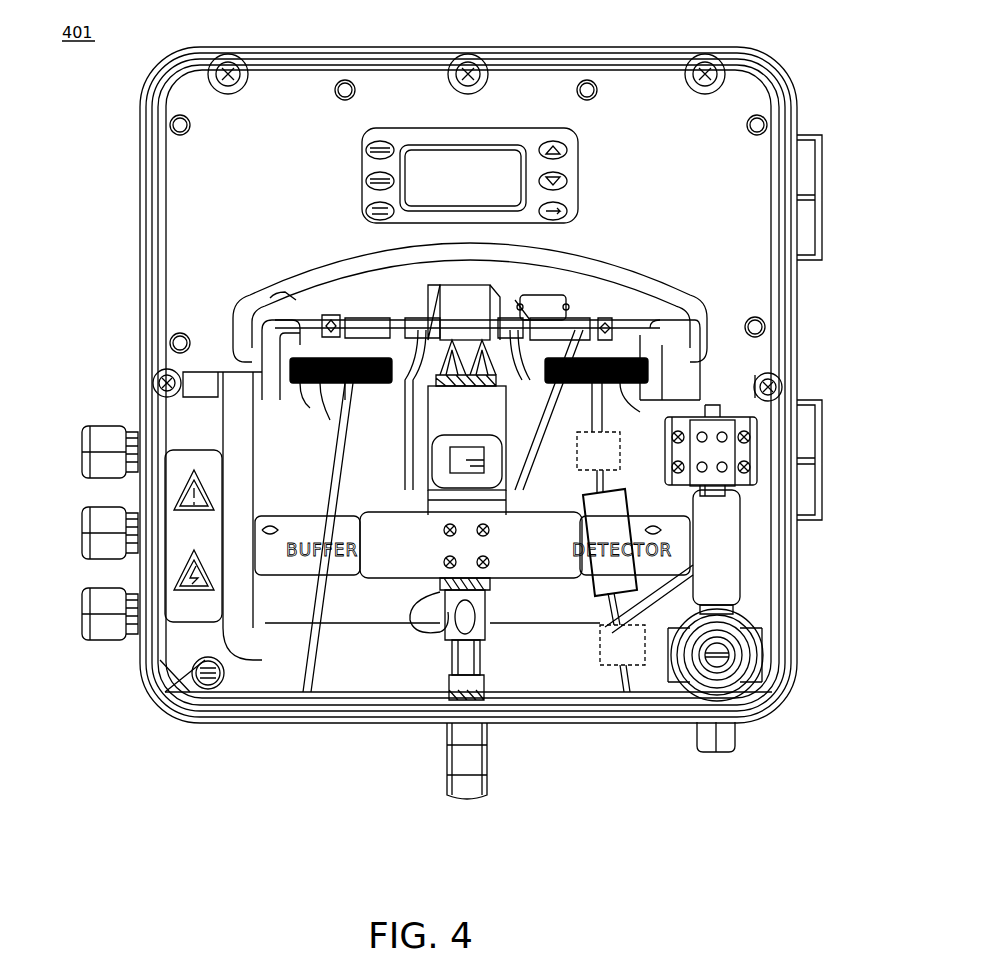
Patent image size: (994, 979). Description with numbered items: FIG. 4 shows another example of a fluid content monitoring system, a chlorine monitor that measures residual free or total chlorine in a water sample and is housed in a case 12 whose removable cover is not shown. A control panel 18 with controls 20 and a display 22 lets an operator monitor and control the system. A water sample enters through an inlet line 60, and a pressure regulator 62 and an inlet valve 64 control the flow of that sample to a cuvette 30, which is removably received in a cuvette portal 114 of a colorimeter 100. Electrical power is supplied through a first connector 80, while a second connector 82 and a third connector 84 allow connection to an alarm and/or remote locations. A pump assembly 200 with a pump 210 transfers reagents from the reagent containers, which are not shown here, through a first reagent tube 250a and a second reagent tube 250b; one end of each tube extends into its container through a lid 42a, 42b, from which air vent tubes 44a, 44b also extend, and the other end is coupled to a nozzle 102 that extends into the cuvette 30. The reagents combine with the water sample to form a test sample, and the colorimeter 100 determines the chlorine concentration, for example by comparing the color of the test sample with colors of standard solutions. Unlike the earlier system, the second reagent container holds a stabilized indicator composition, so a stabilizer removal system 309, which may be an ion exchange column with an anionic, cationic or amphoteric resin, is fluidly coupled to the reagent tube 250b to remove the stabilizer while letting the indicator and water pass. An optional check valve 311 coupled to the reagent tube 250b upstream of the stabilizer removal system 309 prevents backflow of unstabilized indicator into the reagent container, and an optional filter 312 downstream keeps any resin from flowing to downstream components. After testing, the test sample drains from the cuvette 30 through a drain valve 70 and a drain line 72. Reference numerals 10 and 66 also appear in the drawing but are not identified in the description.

The chlorine analyzer device 10 is at (868, 116).
The case 12 is at (784, 82).
The control panel 18 is at (578, 186).
The controls 20 is at (364, 182).
The display 22 is at (466, 146).
The cuvette 30 is at (505, 450).
The lid 42a is at (370, 384).
The lid 42b is at (636, 386).
The air vent tube 44a is at (258, 312).
The air vent tube 44b is at (684, 308).
The inlet line 60 is at (736, 738).
The pressure regulator 62 is at (740, 665).
The inlet valve 64 is at (757, 406).
The tubing 66 is at (542, 402).
The drain valve 70 is at (490, 586).
The drain line 72 is at (482, 657).
The first connector 80 is at (82, 460).
The second connector 82 is at (82, 533).
The third connector 84 is at (82, 620).
The colorimeter 100 is at (428, 503).
The nozzle 102 is at (438, 392).
The cuvette portal 114 is at (506, 490).
The pump assembly 200 is at (510, 298).
The pump 210 is at (466, 298).
The first reagent tube 250a is at (334, 458).
The second reagent tube 250b is at (598, 478).
The stabilizer removal system 309 is at (610, 542).
The check valve 311 is at (622, 645).
The filter 312 is at (598, 451).